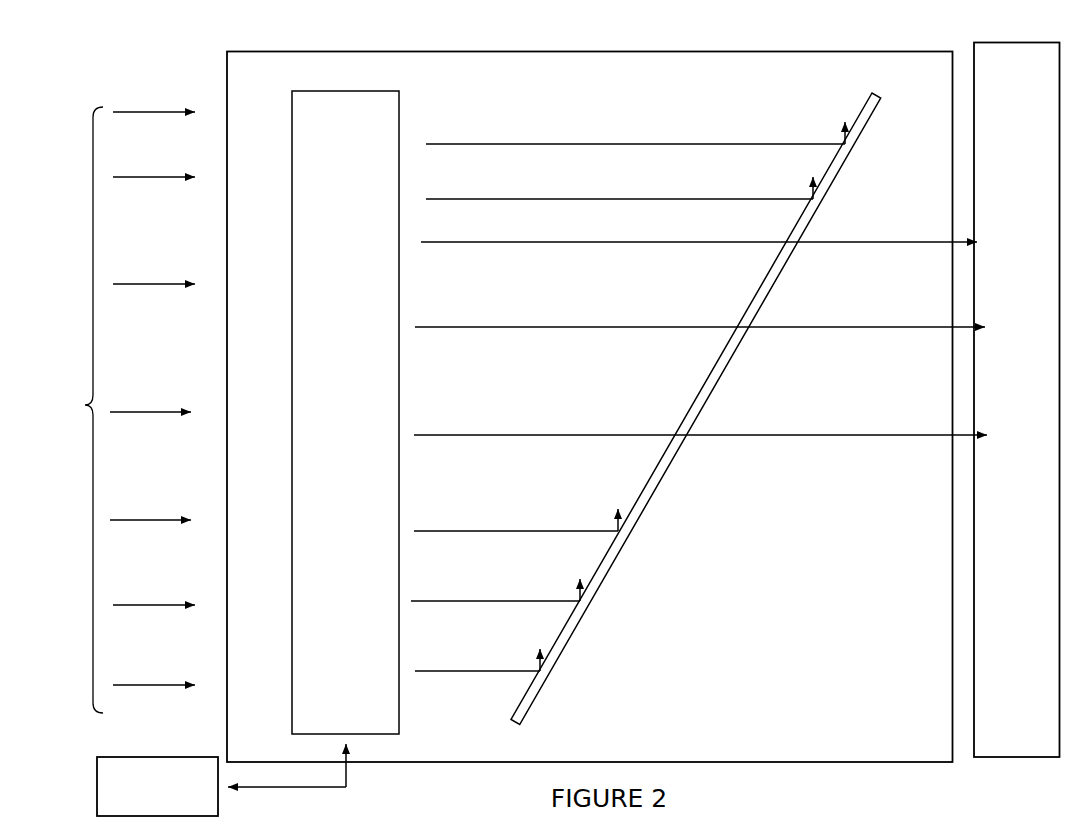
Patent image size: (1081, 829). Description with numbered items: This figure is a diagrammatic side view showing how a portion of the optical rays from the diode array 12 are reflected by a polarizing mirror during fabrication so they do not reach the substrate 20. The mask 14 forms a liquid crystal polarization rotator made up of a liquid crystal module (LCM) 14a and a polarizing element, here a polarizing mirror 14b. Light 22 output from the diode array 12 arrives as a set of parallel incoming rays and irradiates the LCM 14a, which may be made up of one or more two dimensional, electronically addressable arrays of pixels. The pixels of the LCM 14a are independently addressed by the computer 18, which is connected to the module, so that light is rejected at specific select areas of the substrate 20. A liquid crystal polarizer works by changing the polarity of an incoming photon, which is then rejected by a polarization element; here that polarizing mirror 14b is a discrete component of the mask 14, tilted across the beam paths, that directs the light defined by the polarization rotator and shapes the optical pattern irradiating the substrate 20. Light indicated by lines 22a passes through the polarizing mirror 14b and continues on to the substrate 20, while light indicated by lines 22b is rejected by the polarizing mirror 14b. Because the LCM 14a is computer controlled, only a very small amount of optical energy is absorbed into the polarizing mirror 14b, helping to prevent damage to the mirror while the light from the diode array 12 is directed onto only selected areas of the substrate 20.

The diode array 12 is at (110, 57).
The mask 14 is at (586, 405).
The liquid crystal module 14a is at (345, 412).
The polarizing mirror 14b is at (652, 488).
The computer 18 is at (221, 780).
The substrate 20 is at (1017, 400).
The light 22 is at (125, 410).
The lines indicating passed light 22a is at (679, 243).
The lines indicating rejected light 22b is at (800, 143).